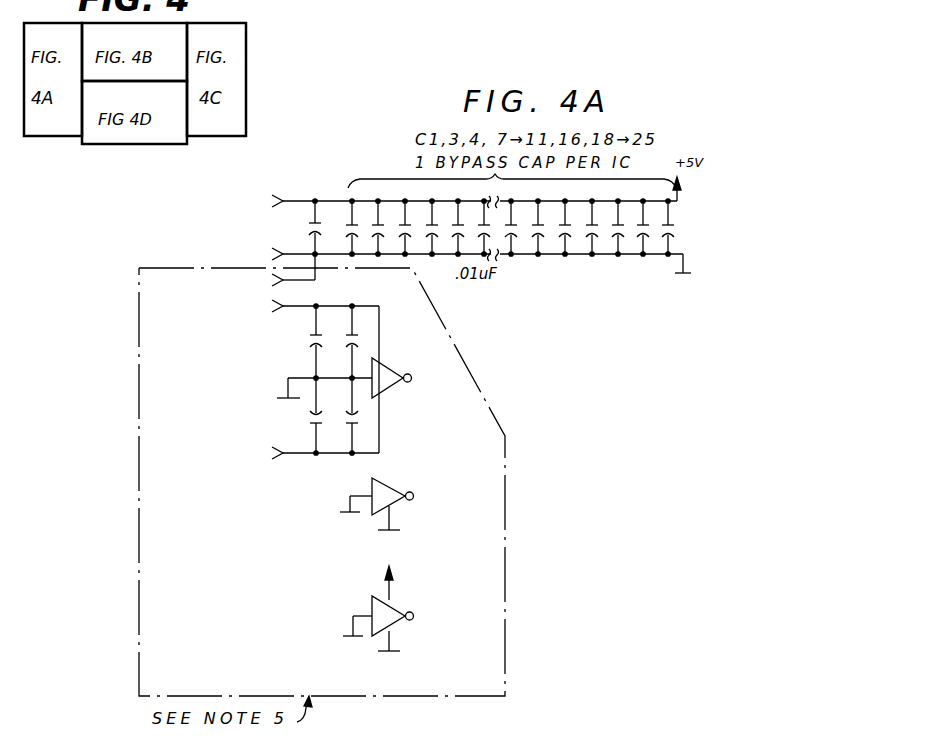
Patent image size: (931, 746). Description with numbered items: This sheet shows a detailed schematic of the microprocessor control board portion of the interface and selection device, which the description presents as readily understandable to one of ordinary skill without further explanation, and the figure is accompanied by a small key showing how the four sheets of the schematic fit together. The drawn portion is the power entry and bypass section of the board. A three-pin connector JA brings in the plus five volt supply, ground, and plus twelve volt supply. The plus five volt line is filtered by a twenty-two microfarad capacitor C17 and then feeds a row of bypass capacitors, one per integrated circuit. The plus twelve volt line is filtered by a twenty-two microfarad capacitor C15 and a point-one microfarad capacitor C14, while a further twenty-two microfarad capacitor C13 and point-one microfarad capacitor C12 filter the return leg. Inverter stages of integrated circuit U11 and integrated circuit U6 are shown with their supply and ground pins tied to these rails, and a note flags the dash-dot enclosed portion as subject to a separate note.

The 3-pin power connector JA is at (231, 327).
The 22uF capacitor C17 is at (300, 239).
The 22uF capacitor C15 is at (291, 342).
The .1uF capacitor C14 is at (340, 342).
The 22uF capacitor C13 is at (297, 415).
The .1uF capacitor C12 is at (340, 415).
The inverter IC U11 is at (373, 438).
The inverter IC U6 is at (378, 601).